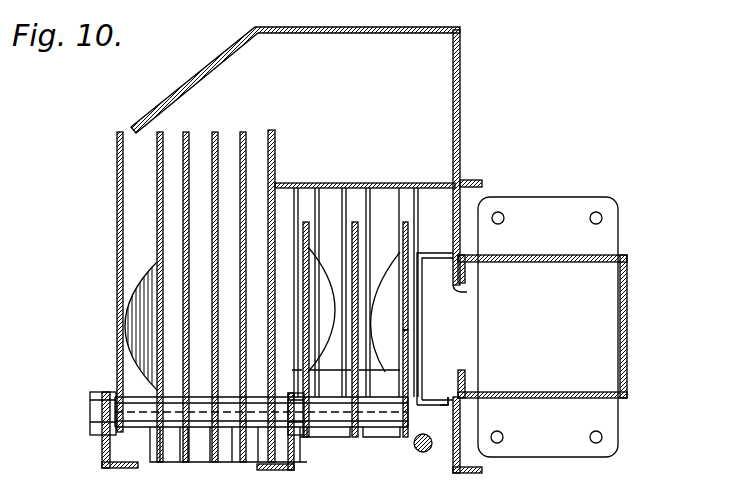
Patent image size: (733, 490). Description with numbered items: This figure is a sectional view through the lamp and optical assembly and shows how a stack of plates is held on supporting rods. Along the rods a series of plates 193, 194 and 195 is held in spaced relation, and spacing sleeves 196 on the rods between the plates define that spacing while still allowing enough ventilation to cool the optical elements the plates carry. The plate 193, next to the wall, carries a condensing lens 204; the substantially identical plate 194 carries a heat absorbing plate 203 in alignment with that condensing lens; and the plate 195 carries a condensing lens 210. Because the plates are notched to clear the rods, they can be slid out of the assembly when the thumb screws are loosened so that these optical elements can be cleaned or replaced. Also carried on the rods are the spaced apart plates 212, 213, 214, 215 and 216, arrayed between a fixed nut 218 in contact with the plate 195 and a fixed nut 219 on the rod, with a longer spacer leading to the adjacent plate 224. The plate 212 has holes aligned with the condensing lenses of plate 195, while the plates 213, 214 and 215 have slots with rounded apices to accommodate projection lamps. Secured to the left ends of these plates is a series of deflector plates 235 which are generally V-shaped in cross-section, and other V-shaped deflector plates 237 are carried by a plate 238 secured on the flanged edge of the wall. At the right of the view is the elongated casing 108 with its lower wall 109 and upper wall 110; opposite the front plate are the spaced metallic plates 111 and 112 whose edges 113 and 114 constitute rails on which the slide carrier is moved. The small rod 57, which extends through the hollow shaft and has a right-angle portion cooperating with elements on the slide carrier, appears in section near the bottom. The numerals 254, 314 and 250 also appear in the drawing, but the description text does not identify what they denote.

The plate 238 is at (419, 182).
The housing foot 254 is at (470, 474).
The plate 224 is at (117, 185).
The plate 216 is at (160, 129).
The plate 215 is at (188, 129).
The plate 214 is at (214, 129).
The plate 213 is at (245, 129).
The plate 212 is at (273, 129).
The lens 314 is at (133, 307).
The deflector plates 237 is at (342, 183).
The plate 195 is at (300, 210).
The plate 194 is at (358, 215).
The plate 193 is at (406, 226).
The spacing sleeves 196 is at (379, 430).
The condensing lens 210 is at (308, 374).
The heat absorbing plate 203 is at (357, 258).
The condensing lens 204 is at (409, 247).
The metallic plate 111 is at (454, 257).
The metallic plate 112 is at (456, 386).
The edge 113 is at (460, 287).
The edge 114 is at (459, 370).
The upper wall 110 is at (534, 256).
The lower wall 109 is at (568, 397).
The elongated casing 108 is at (628, 298).
The deflector plates 235 is at (233, 455).
The spacer 250 is at (320, 463).
The fixed nut 219 is at (108, 392).
The fixed nut 218 is at (300, 432).
The rod 57 is at (424, 451).